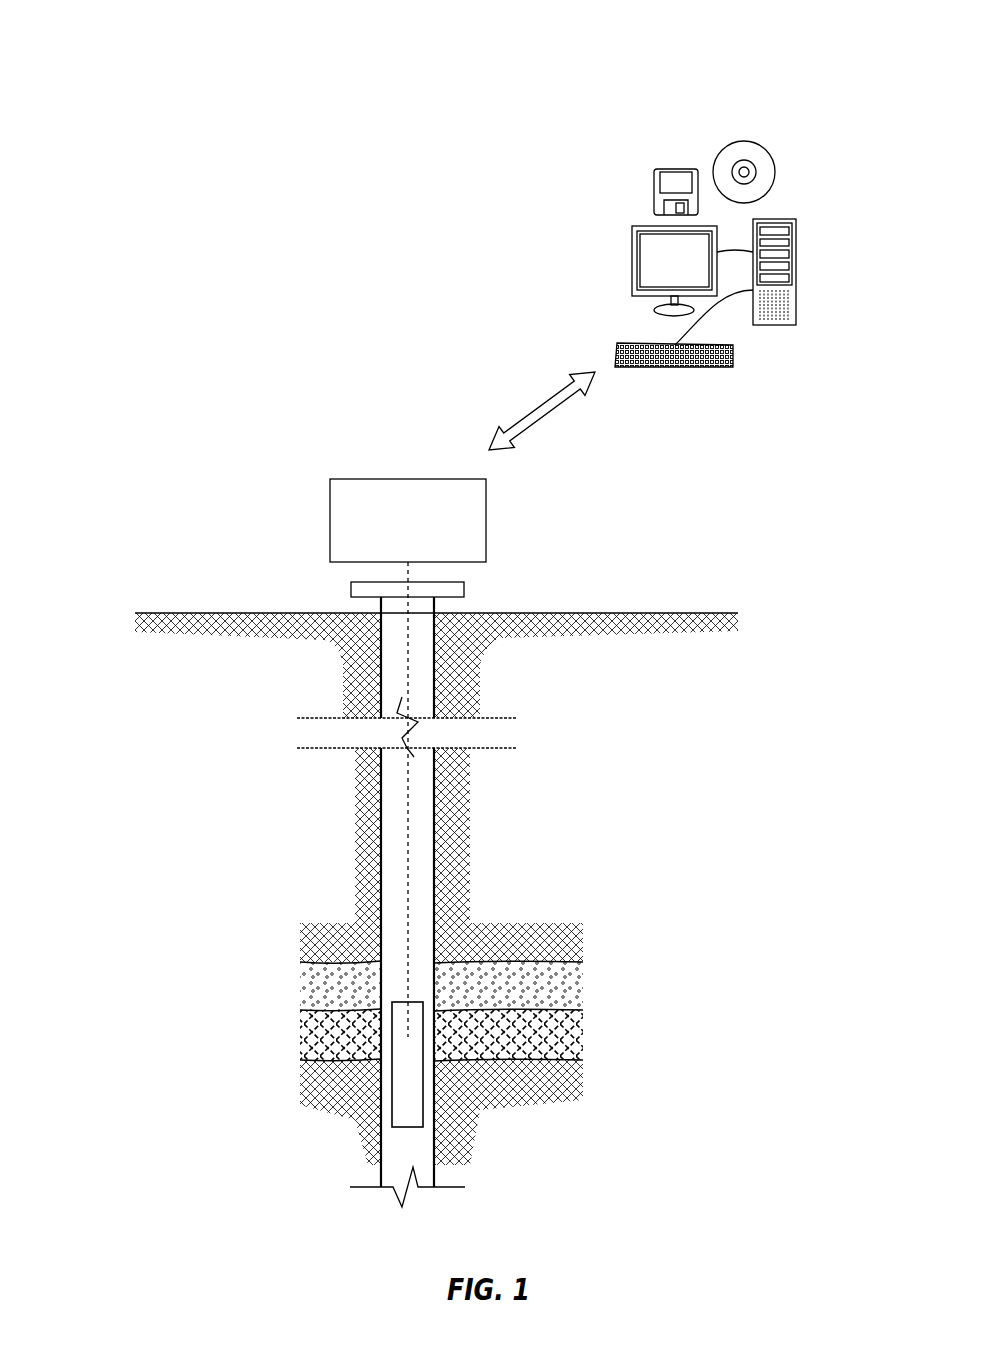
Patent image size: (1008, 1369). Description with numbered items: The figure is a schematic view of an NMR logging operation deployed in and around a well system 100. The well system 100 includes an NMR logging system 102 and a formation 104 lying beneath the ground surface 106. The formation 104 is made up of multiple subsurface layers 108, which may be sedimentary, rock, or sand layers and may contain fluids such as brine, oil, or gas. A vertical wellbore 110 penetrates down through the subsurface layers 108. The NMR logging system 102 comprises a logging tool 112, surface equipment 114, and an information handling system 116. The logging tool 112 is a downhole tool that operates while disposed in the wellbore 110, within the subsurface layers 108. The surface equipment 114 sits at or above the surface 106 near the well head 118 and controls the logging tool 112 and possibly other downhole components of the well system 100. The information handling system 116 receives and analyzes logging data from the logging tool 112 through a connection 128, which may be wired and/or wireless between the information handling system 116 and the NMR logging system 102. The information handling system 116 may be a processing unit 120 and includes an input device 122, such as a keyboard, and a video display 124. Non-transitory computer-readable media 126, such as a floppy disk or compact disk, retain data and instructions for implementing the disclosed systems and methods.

The well system 100 is at (166, 102).
The NMR logging system 102 is at (690, 511).
The formation 104 is at (211, 999).
The ground surface 106 is at (572, 612).
The subsurface layers 108 is at (594, 939).
The wellbore 110 is at (382, 850).
The logging tool 112 is at (407, 1108).
The surface equipment 114 is at (342, 479).
The information handling system 116 is at (603, 70).
The well head 118 is at (351, 588).
The processing unit 120 is at (785, 219).
The input device 122 is at (705, 367).
The video display 124 is at (646, 226).
The non-transitory computer-readable media 126 is at (676, 169).
The connection 128 is at (540, 400).